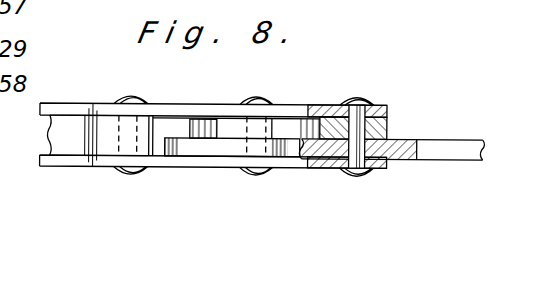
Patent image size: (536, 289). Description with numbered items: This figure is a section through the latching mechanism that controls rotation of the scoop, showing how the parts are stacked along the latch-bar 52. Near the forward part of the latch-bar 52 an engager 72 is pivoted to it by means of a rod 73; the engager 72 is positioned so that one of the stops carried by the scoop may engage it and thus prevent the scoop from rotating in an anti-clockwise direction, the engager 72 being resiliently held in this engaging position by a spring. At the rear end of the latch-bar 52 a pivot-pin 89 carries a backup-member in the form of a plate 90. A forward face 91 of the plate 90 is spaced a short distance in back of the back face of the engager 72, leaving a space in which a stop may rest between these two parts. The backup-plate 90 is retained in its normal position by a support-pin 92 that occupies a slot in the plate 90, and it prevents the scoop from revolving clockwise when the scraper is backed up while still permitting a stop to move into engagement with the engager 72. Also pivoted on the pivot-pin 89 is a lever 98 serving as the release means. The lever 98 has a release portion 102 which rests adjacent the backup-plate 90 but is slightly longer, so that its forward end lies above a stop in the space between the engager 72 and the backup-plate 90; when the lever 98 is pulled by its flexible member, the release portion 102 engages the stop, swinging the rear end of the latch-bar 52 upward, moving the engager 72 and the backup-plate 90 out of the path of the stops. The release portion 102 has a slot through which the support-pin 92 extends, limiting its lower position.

The latch-bar 52 is at (52, 173).
The engager 72 is at (65, 128).
The rod 73 is at (128, 170).
The pivot-pin 89 is at (358, 120).
The backup-plate 90 is at (283, 133).
The forward face 91 is at (188, 121).
The support-pin 92 is at (252, 172).
The lever 98 is at (451, 159).
The release portion 102 is at (185, 142).